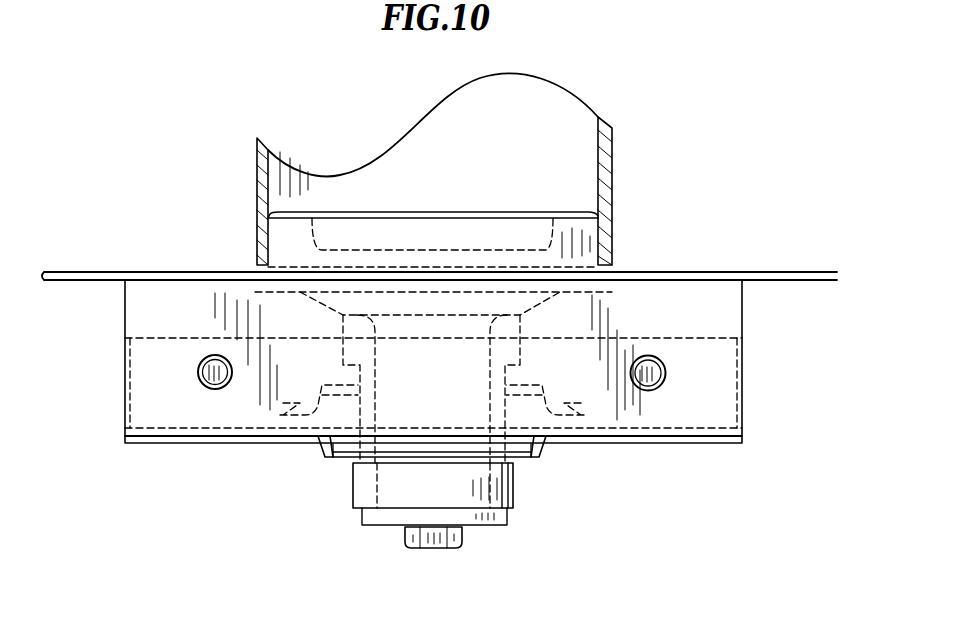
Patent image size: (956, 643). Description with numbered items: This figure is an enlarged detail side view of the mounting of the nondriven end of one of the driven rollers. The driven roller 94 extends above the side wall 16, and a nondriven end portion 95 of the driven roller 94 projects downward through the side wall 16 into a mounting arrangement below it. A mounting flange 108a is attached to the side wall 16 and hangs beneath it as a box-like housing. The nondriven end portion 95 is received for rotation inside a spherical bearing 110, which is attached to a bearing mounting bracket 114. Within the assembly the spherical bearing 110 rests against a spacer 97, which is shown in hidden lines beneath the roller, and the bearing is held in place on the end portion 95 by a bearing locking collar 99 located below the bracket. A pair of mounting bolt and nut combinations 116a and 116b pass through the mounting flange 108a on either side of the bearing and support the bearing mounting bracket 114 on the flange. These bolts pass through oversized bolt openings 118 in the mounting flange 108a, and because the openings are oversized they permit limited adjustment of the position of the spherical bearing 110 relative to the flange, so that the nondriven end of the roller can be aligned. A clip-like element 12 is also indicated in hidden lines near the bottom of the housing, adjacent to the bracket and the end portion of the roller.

The side wall 16 is at (187, 277).
The driven roller 94 is at (257, 217).
The spacer 97 is at (513, 330).
The oversized bolt openings 118 is at (212, 352).
The mounting flange 108a is at (720, 310).
The mounting bolt and nut combination 116a is at (655, 373).
The mounting bolt and nut combination 116b is at (207, 370).
The clip 12 is at (278, 422).
The spherical bearing 110 is at (523, 422).
The bearing mounting bracket 114 is at (655, 438).
The bearing locking collar 99 is at (503, 478).
The nondriven end portion 95 is at (407, 462).